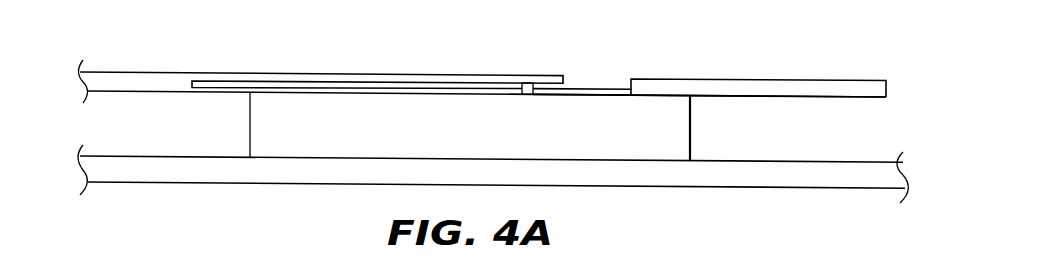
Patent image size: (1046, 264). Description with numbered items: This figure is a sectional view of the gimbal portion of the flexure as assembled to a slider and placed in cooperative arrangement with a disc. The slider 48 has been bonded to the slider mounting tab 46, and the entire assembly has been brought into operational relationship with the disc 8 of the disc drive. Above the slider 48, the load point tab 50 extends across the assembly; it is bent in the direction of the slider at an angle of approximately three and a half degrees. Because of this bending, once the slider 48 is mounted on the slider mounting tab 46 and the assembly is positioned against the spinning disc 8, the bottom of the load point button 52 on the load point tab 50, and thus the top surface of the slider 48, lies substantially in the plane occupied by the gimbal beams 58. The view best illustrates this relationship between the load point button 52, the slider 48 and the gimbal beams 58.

The disc 8 is at (813, 162).
The slider mounting tab 46 is at (746, 79).
The slider 48 is at (677, 128).
The load point tab 50 is at (320, 72).
The load point button 52 is at (528, 96).
The gimbal beams 58 is at (597, 88).